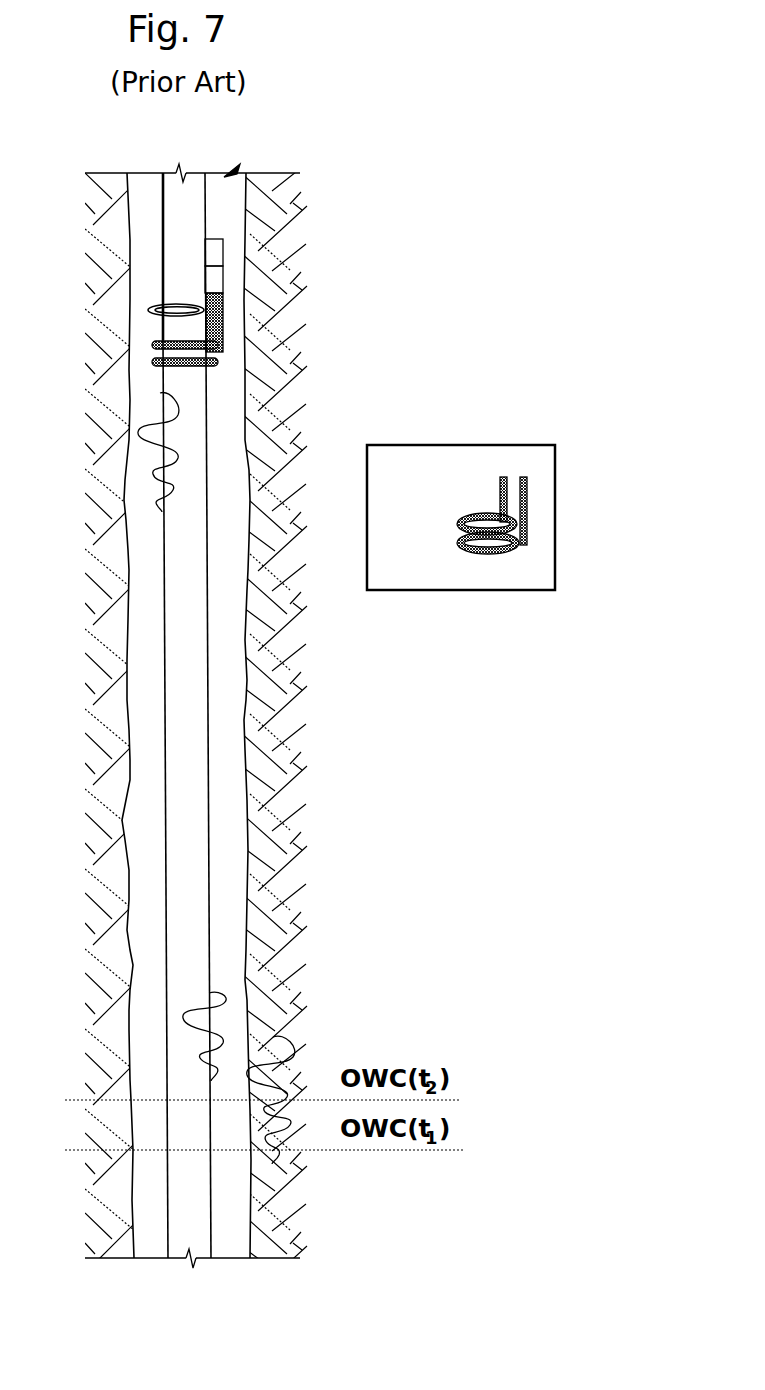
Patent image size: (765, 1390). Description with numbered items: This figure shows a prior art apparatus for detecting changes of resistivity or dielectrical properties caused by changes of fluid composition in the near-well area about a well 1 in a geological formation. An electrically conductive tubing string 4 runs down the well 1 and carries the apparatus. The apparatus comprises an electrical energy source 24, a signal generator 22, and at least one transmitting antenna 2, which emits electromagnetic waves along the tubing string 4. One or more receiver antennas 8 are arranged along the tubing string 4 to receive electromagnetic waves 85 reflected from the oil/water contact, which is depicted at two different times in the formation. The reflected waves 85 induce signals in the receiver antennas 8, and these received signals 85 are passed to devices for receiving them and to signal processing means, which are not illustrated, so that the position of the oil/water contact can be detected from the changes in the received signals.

The well 1 is at (235, 172).
The electrically conductive tubing string 4 is at (212, 1232).
The transmitting antenna 2 is at (212, 312).
The electrical energy source 24 is at (224, 256).
The signal generator 22 is at (224, 283).
The receiver antennas 8 is at (225, 363).
The electromagnetic waves 85 is at (280, 1048).